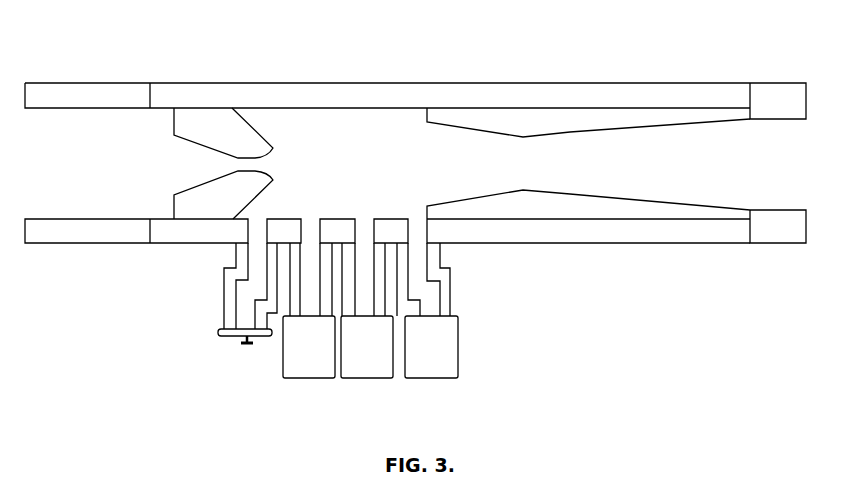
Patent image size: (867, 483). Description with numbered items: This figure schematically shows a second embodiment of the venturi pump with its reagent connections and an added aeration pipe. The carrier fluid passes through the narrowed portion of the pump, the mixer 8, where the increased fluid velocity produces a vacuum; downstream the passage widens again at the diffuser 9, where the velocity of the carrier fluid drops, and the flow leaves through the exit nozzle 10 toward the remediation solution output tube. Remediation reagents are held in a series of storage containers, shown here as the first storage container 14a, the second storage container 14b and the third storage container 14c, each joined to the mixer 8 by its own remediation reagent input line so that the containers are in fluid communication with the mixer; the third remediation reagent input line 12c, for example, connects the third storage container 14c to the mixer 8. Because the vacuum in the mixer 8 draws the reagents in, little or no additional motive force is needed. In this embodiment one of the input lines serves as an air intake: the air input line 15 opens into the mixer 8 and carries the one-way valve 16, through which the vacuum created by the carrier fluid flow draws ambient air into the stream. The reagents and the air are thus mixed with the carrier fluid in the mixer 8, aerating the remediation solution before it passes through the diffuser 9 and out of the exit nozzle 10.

The mixer 8 is at (321, 127).
The diffuser 9 is at (558, 148).
The exit nozzle 10 is at (740, 158).
The third remediation reagent input line 12c is at (422, 283).
The first storage container 14a is at (295, 368).
The second storage container 14b is at (362, 368).
The third storage container 14c is at (432, 368).
The air input line 15 is at (238, 260).
The one-way valve 16 is at (218, 332).